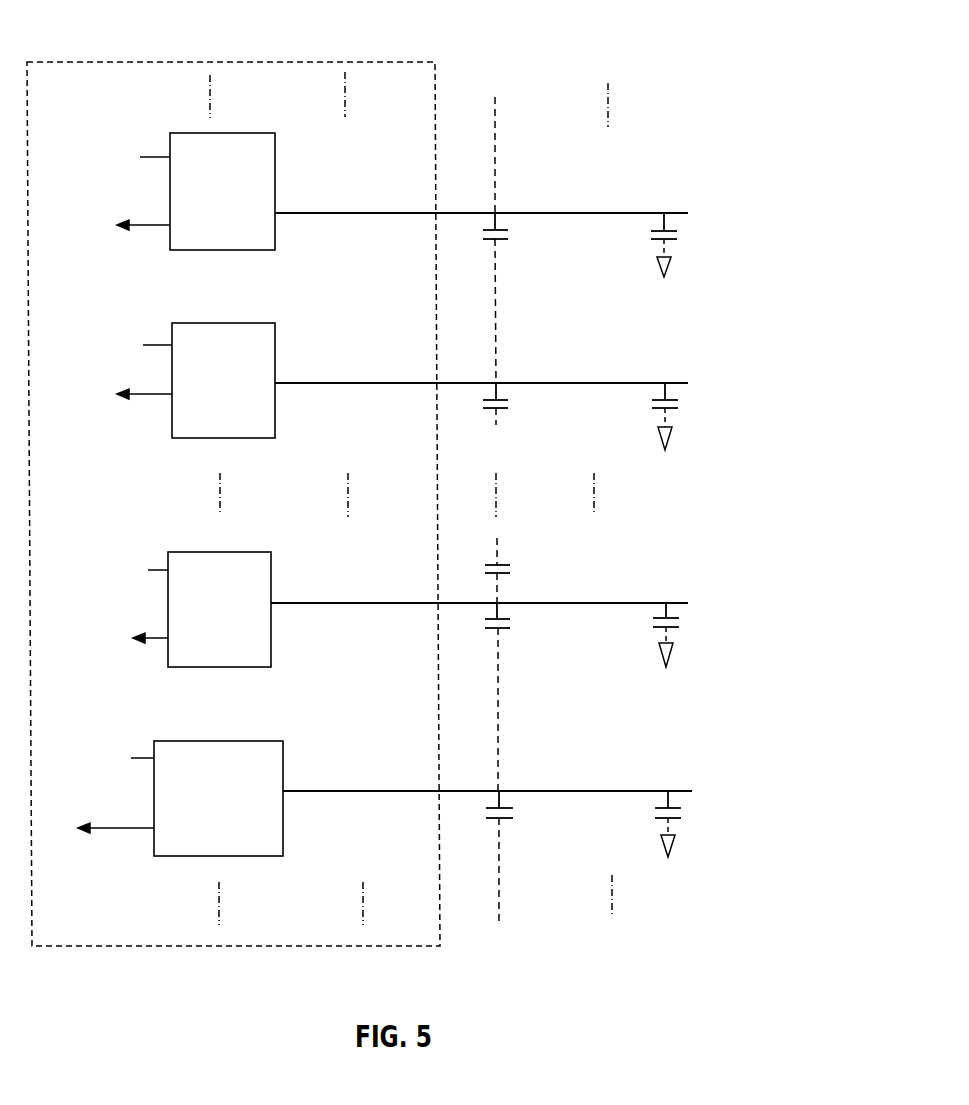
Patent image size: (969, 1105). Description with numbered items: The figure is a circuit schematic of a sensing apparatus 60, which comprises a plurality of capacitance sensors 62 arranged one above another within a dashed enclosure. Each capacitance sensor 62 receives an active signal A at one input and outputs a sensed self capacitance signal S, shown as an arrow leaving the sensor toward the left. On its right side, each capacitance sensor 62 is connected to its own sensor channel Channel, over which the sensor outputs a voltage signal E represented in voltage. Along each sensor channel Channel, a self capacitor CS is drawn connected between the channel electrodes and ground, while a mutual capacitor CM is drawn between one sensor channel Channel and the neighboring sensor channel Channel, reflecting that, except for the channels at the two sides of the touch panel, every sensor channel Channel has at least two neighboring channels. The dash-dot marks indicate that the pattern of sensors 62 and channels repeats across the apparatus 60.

The sensing apparatus 60 is at (182, 62).
The capacitance sensor 62 is at (262, 207).
The active signal A is at (112, 452).
The self capacitance signal S is at (113, 514).
The voltage signal E is at (481, 489).
The sensor channel Channel is at (339, 475).
The mutual capacitor CM is at (580, 511).
The self capacitor CS is at (721, 535).